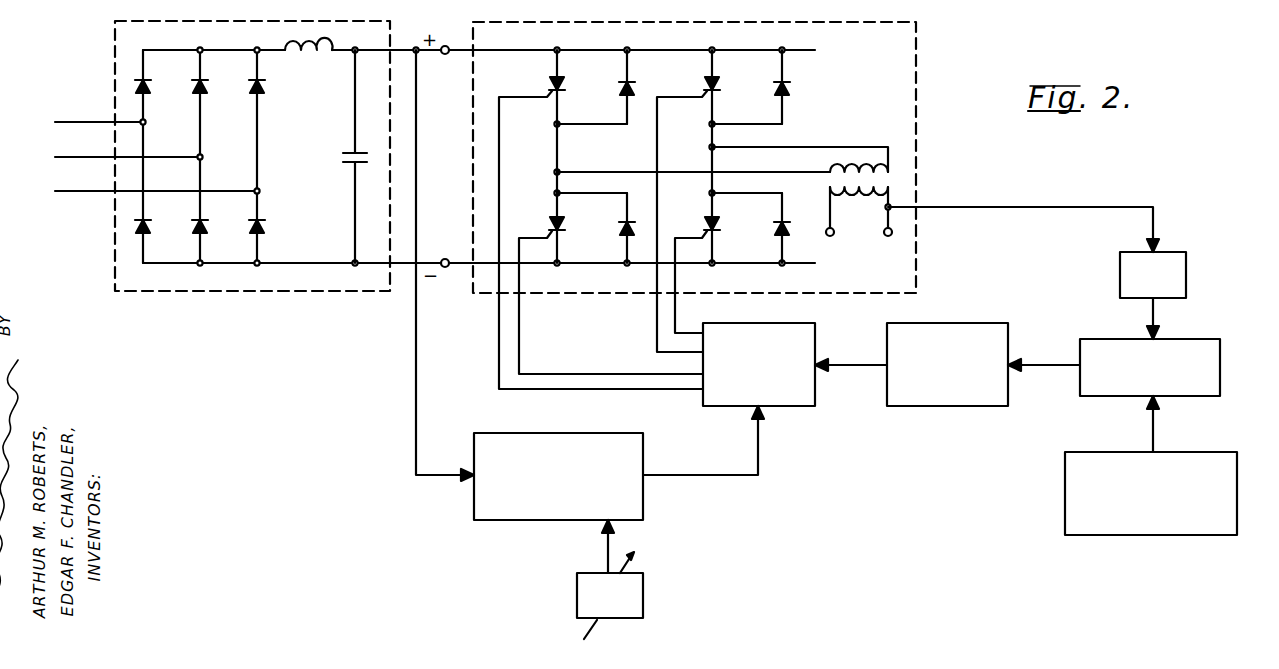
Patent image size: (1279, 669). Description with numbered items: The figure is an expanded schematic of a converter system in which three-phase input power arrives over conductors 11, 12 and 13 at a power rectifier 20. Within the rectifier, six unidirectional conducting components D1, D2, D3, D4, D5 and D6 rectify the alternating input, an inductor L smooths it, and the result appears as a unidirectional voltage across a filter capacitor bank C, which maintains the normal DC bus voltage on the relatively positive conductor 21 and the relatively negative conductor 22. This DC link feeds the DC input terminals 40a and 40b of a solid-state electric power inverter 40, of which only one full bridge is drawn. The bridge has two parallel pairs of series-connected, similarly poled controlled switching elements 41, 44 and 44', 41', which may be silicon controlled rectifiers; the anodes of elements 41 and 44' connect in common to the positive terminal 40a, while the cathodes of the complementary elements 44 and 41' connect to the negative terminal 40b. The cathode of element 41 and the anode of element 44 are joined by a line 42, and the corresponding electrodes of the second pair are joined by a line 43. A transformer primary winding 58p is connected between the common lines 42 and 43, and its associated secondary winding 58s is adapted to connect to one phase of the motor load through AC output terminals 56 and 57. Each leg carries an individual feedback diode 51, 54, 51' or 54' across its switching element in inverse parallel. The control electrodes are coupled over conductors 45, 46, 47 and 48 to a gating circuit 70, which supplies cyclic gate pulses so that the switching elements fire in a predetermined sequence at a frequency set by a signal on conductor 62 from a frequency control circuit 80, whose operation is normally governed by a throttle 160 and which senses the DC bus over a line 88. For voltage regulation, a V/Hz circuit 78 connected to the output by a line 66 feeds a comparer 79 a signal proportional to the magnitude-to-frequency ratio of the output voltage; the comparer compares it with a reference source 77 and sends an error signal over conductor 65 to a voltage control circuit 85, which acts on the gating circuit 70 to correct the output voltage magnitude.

The conductor 11 is at (89, 122).
The conductor 12 is at (118, 157).
The conductor 13 is at (146, 191).
The power rectifier 20 is at (203, 292).
The relatively positive conductor 21 is at (406, 49).
The relatively negative conductor 22 is at (405, 264).
The solid-state electric power inverter 40 is at (917, 72).
The positive DC input terminal 40a is at (445, 55).
The negative DC input terminal 40b is at (445, 258).
The controlled switching element 41 is at (576, 76).
The controlled switching element 41' is at (734, 216).
The line 42 is at (556, 150).
The line 43 is at (711, 154).
The controlled switching element 44 is at (576, 216).
The controlled switching element 44' is at (734, 76).
The conductor 45 is at (565, 393).
The conductor 46 is at (676, 311).
The conductor 47 is at (558, 373).
The conductor 48 is at (656, 313).
The feedback diode 51 is at (610, 96).
The feedback diode 51' is at (761, 238).
The feedback diode 54 is at (610, 238).
The feedback diode 54' is at (761, 97).
The AC output terminal 56 is at (831, 237).
The AC output terminal 57 is at (887, 237).
The transformer primary winding 58p is at (858, 165).
The transformer secondary winding 58s is at (858, 203).
The conductor 62 is at (742, 478).
The conductor 65 is at (1049, 362).
The line 66 is at (1044, 207).
The gating circuit 70 is at (787, 400).
The reference source 77 is at (1157, 536).
The V/Hz circuit 78 is at (1187, 272).
The comparer 79 is at (1221, 365).
The frequency control circuit 80 is at (507, 513).
The voltage control circuit 85 is at (955, 407).
The line 88 is at (415, 408).
The throttle 160 is at (644, 595).
The unidirectional conducting component D1 is at (149, 86).
The unidirectional conducting component D2 is at (263, 226).
The unidirectional conducting component D3 is at (206, 86).
The unidirectional conducting component D4 is at (149, 226).
The unidirectional conducting component D5 is at (263, 86).
The unidirectional conducting component D6 is at (206, 226).
The inductor L is at (308, 57).
The filter capacitor bank C is at (345, 168).